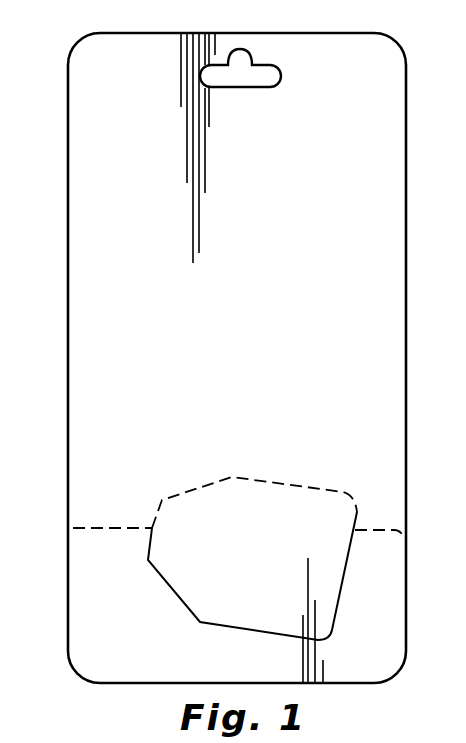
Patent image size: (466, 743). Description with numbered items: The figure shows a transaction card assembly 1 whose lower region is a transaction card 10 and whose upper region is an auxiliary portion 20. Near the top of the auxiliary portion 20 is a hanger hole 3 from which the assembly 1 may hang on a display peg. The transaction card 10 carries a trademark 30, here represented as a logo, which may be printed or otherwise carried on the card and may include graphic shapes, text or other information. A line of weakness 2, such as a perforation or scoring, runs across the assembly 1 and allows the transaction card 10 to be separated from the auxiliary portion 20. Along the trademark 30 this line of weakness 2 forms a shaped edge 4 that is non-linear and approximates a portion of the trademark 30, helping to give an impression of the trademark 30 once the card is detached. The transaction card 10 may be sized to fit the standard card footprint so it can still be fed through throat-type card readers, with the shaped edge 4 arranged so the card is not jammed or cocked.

The transaction card assembly 1 is at (76, 37).
The line of weakness 2 is at (112, 527).
The hanger hole 3 is at (250, 73).
The shaped edge 4 is at (231, 477).
The transaction card 10 is at (405, 590).
The auxiliary portion 20 is at (399, 186).
The trademark 30 is at (354, 518).